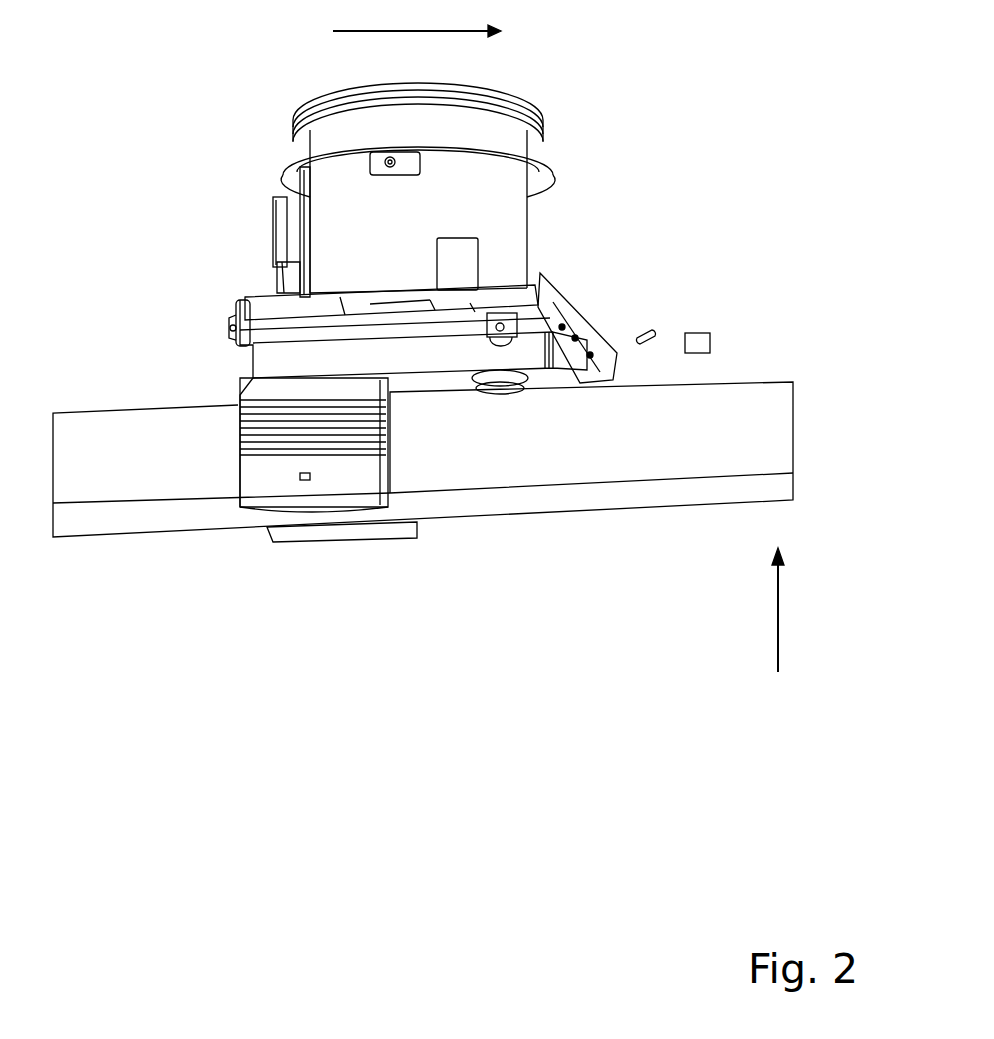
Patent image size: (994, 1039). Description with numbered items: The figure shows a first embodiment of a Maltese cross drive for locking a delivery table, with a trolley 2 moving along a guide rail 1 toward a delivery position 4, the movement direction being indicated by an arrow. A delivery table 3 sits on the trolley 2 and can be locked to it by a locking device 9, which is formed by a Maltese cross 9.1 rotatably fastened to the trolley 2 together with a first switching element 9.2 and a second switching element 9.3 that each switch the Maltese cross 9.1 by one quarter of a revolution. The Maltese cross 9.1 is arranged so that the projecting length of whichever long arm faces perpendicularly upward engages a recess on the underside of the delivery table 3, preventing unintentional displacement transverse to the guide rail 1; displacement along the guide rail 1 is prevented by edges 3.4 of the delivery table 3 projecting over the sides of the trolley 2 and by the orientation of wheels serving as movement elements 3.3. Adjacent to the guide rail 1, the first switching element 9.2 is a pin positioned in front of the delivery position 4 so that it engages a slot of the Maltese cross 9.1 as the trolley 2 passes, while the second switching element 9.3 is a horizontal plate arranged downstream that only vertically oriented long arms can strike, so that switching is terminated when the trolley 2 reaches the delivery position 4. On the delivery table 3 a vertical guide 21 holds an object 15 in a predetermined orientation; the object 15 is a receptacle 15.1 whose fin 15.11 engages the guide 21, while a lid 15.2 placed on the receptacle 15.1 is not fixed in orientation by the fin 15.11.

The guide rail 1 is at (147, 458).
The trolley 2 is at (430, 357).
The delivery table 3 is at (338, 374).
The movement elements 3.3 is at (245, 305).
The edges 3.4 is at (232, 328).
The delivery position 4 is at (777, 642).
The locking device 9 is at (593, 330).
The Maltese cross 9.1 is at (500, 326).
The first switching element 9.2 is at (652, 332).
The second switching element 9.3 is at (710, 345).
The object 15 is at (321, 186).
The receptacle 15.1 is at (333, 197).
The lid 15.2 is at (310, 103).
The fin 15.11 is at (302, 275).
The vertical guide 21 is at (287, 237).